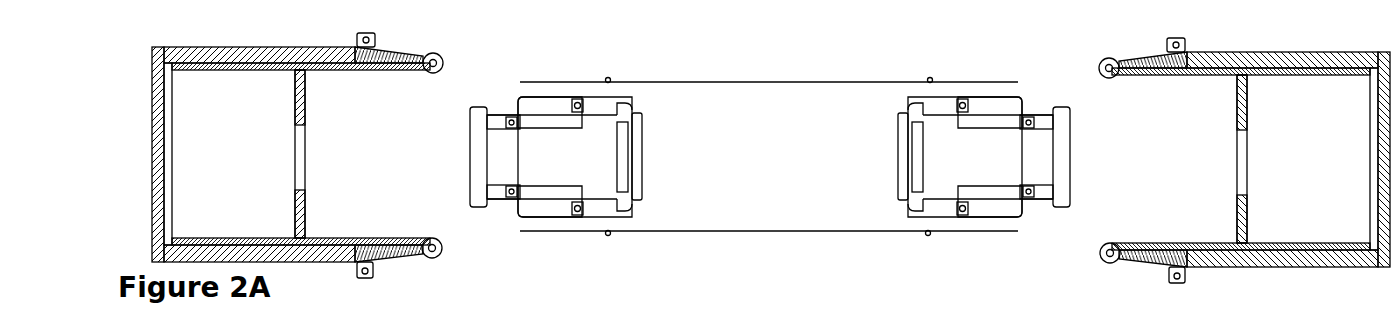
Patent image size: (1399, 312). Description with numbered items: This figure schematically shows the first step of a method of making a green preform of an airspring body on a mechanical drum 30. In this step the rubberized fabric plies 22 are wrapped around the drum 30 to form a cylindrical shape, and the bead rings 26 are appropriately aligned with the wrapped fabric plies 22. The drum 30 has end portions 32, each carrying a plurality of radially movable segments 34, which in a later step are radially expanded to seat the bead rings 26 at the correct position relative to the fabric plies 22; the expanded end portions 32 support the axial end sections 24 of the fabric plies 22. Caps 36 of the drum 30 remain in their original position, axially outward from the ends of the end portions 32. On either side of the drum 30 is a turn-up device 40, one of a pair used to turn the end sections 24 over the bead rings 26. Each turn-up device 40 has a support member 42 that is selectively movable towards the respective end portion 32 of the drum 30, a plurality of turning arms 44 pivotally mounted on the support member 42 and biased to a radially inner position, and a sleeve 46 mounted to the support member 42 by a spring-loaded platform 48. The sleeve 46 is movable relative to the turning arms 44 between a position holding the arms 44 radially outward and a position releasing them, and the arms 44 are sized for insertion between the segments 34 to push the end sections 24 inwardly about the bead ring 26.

The fabric plies 22 is at (735, 82).
The end sections 24 is at (555, 82).
The bead rings 26 is at (608, 78).
The drum 30 is at (762, 168).
The end portions 32 is at (580, 170).
The segments 34 is at (532, 108).
The caps 36 is at (469, 155).
The turn-up device 40 is at (151, 47).
The support member 42 is at (150, 256).
The turning arms 44 is at (390, 259).
The sleeve 46 is at (330, 73).
The spring-loaded platform 48 is at (305, 207).